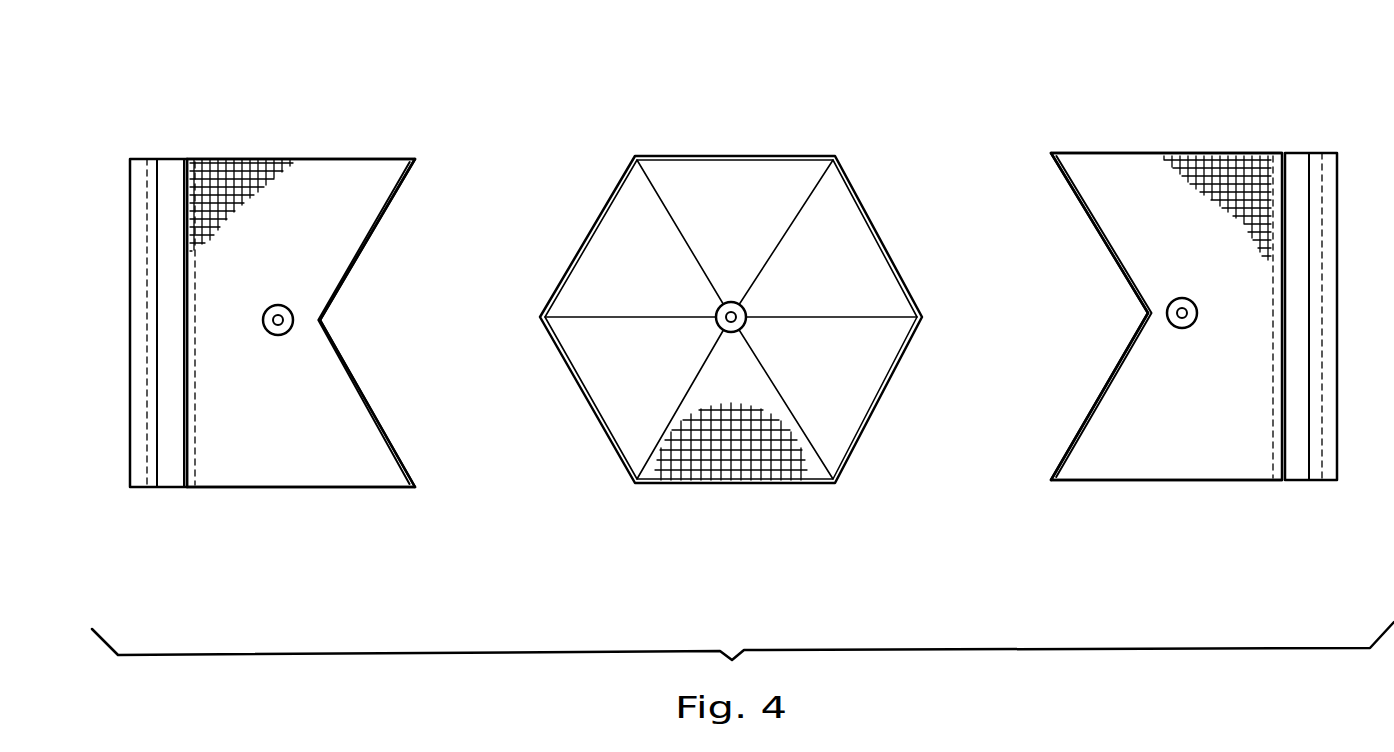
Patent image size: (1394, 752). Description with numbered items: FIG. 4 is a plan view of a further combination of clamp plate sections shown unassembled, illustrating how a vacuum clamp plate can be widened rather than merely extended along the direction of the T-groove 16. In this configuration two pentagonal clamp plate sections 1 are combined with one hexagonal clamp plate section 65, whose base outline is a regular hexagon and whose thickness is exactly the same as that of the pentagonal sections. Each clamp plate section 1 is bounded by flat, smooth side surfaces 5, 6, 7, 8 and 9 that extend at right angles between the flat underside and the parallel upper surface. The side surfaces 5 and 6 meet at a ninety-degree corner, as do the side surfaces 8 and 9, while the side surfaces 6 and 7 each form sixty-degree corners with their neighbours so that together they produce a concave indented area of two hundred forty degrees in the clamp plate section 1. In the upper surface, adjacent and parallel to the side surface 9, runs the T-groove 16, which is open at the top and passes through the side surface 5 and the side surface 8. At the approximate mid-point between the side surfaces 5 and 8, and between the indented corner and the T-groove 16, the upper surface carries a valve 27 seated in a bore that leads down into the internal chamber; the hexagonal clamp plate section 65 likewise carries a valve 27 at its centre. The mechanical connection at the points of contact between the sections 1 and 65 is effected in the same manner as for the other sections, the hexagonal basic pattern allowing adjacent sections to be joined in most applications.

The clamp plate section 1 is at (287, 145).
The side surface 5 is at (343, 157).
The side surface 6 is at (372, 240).
The side surface 7 is at (375, 408).
The side surface 8 is at (330, 487).
The side surface 9 is at (130, 370).
The T-groove 16 is at (177, 480).
The valve 27 is at (280, 305).
The hexagonal clamp plate section 65 is at (766, 127).